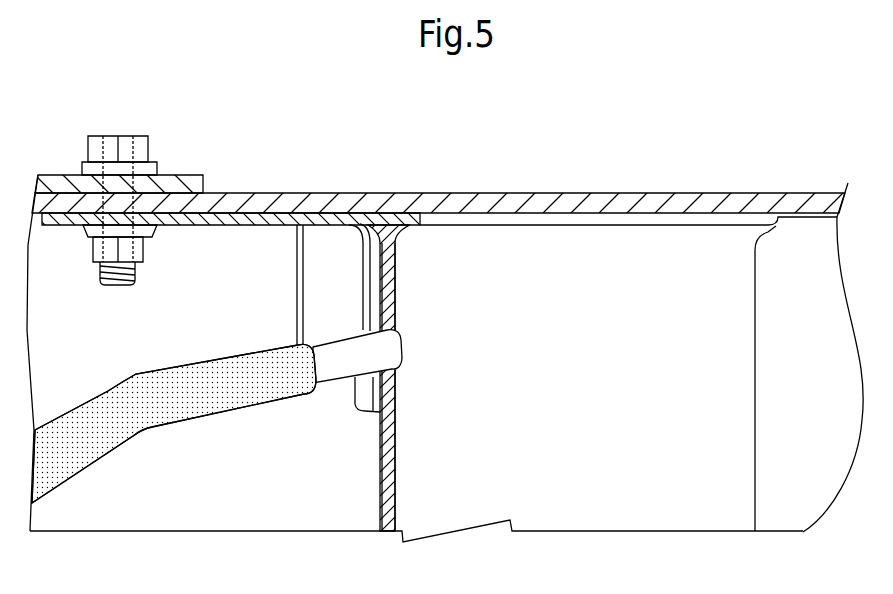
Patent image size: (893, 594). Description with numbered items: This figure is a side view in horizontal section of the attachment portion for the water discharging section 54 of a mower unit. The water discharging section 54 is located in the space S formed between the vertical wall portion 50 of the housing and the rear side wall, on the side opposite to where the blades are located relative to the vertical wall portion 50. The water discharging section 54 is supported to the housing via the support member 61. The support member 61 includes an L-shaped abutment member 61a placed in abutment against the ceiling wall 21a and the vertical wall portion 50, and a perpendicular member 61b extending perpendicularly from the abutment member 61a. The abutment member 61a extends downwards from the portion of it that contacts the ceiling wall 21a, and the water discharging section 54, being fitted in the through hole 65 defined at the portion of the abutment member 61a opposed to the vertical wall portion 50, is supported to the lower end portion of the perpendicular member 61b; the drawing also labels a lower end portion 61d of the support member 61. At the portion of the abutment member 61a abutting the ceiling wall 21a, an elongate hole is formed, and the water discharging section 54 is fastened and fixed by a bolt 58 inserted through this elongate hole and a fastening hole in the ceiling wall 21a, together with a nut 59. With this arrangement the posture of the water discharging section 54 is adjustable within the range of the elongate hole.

The ceiling wall 21a is at (590, 193).
The vertical wall portion 50 is at (742, 418).
The water discharging section 54 is at (333, 393).
The bolt 58 is at (150, 150).
The nut 59 is at (93, 257).
The support member 61 is at (231, 268).
The abutment member 61a is at (182, 237).
The perpendicular member 61b is at (325, 245).
The bracket lower end portion 61d is at (375, 328).
The through hole 65 is at (391, 303).
The space S is at (212, 484).